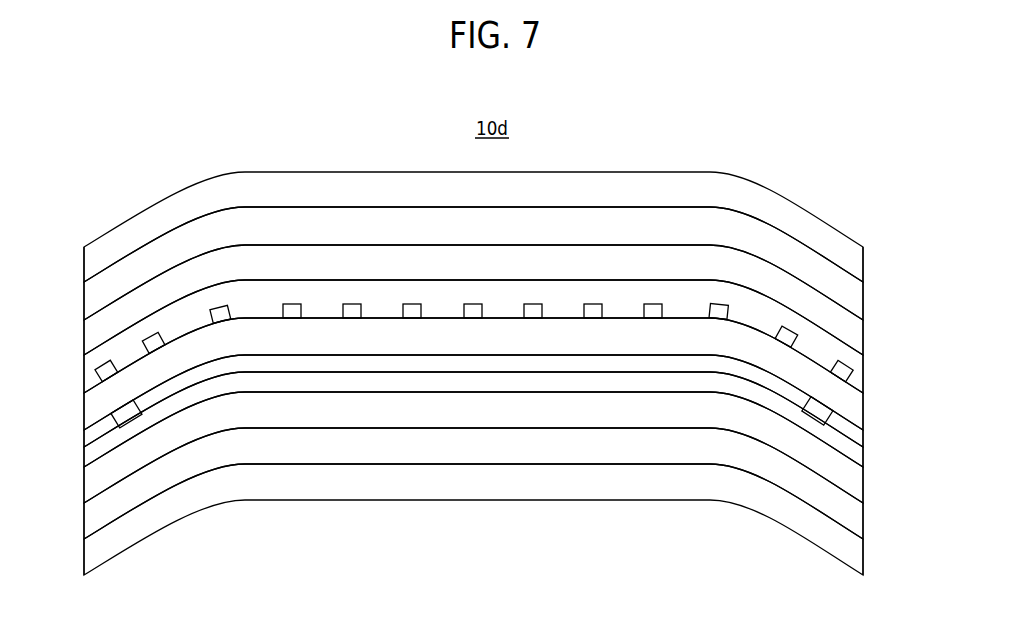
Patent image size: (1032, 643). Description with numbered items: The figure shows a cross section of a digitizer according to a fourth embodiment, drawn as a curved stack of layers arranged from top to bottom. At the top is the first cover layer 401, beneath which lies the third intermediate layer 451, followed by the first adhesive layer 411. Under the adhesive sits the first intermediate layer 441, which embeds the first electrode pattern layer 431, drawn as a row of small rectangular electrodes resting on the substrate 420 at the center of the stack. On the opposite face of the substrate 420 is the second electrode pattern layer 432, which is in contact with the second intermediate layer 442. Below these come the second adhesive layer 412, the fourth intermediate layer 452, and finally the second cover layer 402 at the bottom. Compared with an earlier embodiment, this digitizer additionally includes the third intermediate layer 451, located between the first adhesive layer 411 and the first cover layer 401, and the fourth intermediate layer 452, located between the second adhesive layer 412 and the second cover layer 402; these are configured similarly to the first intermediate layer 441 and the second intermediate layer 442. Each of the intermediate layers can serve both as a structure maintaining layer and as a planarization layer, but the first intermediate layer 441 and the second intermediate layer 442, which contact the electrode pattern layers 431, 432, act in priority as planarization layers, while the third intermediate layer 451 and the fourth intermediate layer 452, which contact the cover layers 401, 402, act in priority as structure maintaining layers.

The first cover layer 401 is at (853, 265).
The third intermediate layer 451 is at (853, 300).
The first adhesive layer 411 is at (853, 340).
The first intermediate layer 441 is at (853, 375).
The substrate 420 is at (853, 410).
The second intermediate layer 442 is at (853, 445).
The second adhesive layer 412 is at (853, 487).
The fourth intermediate layer 452 is at (853, 522).
The second cover layer 402 is at (853, 558).
The first electrode pattern layer 431 is at (99, 363).
The second electrode pattern layer 432 is at (107, 408).